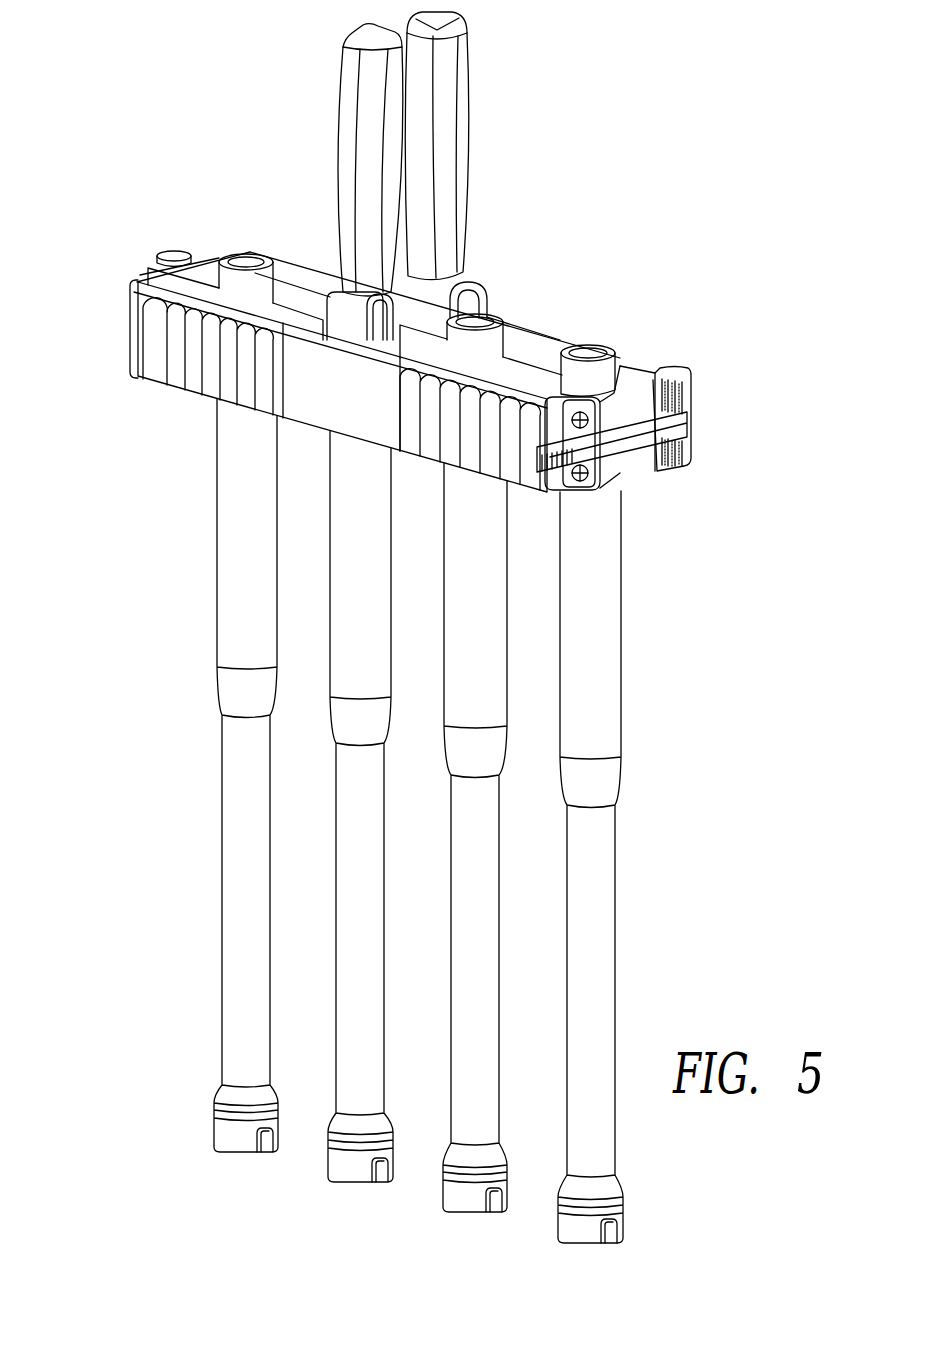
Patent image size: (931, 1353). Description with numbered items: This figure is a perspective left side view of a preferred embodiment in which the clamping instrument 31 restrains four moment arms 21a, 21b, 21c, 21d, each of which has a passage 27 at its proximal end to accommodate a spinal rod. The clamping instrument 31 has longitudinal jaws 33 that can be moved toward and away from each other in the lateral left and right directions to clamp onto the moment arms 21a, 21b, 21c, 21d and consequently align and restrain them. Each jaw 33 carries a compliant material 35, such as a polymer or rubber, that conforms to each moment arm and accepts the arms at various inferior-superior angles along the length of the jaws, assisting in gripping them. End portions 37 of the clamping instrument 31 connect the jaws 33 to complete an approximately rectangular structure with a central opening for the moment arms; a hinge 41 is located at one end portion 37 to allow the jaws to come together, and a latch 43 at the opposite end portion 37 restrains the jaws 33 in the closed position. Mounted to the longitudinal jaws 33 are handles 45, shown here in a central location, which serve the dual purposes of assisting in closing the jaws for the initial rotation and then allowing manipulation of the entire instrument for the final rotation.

The clamping instrument 31 is at (668, 308).
The longitudinal jaw 33 is at (185, 385).
The compliant material 35 is at (553, 330).
The end portion 37 is at (127, 333).
The hinge 41 is at (176, 258).
The latch 43 is at (693, 457).
The handle 45 is at (340, 150).
The moment arm 21a is at (216, 610).
The moment arm 21b is at (330, 625).
The moment arm 21c is at (444, 634).
The moment arm 21d is at (560, 609).
The passage 27 is at (263, 1153).